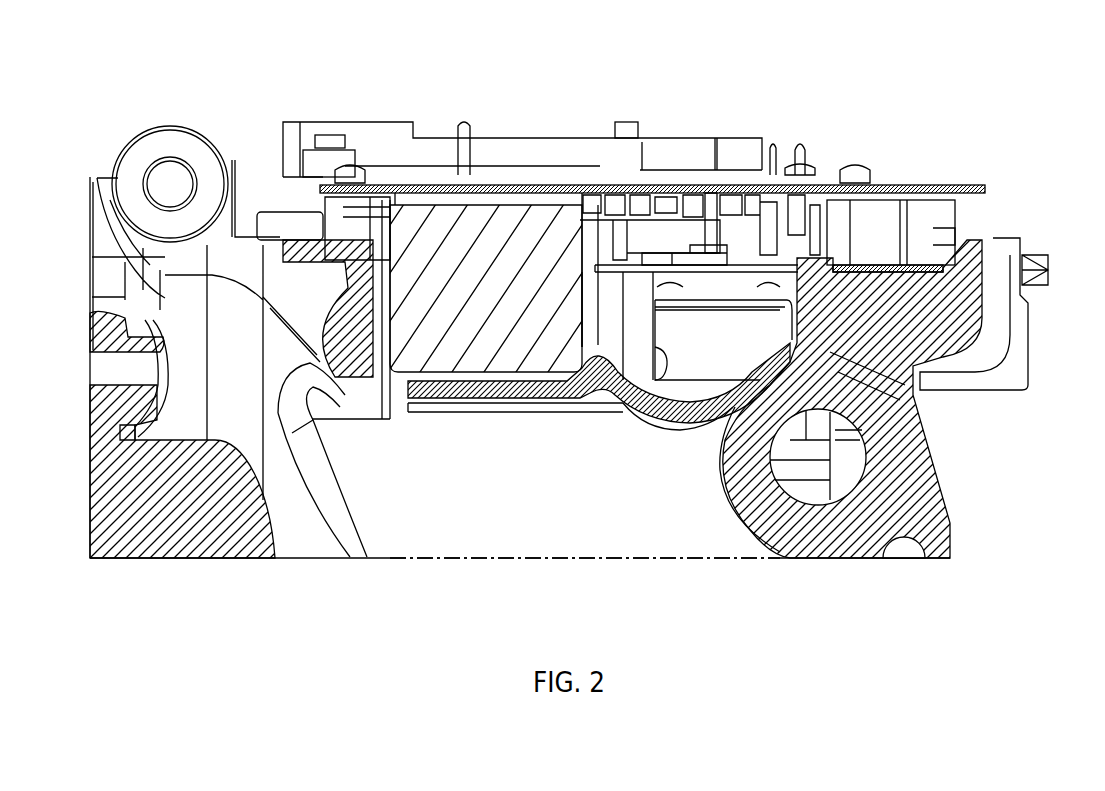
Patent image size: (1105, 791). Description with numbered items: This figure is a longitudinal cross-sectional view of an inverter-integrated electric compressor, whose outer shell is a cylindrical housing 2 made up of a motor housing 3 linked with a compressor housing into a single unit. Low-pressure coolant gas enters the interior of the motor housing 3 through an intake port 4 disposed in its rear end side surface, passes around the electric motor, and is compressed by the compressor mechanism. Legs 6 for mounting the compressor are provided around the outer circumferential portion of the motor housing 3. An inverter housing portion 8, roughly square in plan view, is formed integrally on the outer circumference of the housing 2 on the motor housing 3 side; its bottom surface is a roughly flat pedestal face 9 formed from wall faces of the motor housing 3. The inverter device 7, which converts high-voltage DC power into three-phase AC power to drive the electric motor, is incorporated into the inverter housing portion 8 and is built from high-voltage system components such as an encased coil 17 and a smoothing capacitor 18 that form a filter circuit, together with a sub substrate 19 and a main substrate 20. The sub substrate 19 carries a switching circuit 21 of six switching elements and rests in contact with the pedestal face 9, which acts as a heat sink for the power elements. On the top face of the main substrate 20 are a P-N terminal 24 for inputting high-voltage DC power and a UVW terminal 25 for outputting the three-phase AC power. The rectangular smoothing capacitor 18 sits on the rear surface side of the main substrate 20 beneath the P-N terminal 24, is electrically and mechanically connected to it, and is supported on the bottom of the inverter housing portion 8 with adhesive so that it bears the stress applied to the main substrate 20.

The housing 2 is at (236, 562).
The motor housing 3 is at (586, 530).
The intake port 4 is at (800, 495).
The legs 6 is at (167, 147).
The inverter device 7 is at (810, 149).
The inverter housing portion 8 is at (986, 290).
The pedestal face 9 is at (612, 274).
The encased coil 17 is at (920, 216).
The smoothing capacitor 18 is at (493, 240).
The sub substrate 19 is at (750, 266).
The main substrate 20 is at (668, 184).
The switching circuit 21 is at (672, 250).
The P-N terminal 24 is at (461, 115).
The UVW terminal 25 is at (398, 152).